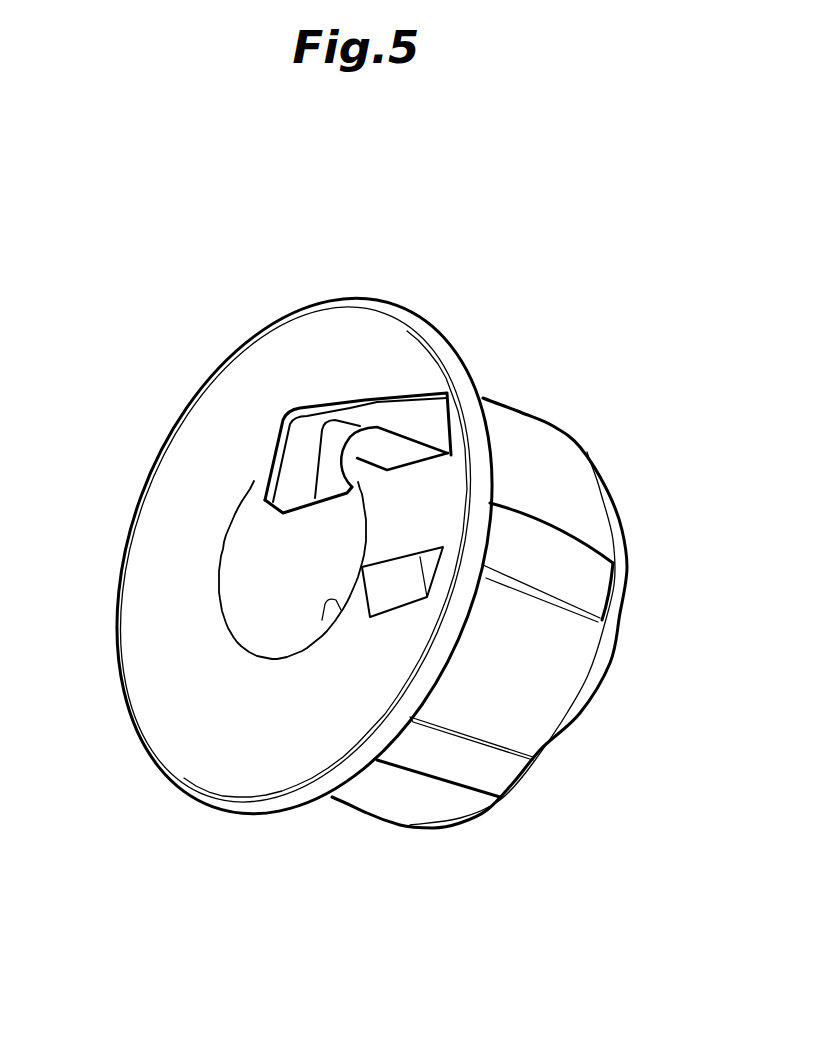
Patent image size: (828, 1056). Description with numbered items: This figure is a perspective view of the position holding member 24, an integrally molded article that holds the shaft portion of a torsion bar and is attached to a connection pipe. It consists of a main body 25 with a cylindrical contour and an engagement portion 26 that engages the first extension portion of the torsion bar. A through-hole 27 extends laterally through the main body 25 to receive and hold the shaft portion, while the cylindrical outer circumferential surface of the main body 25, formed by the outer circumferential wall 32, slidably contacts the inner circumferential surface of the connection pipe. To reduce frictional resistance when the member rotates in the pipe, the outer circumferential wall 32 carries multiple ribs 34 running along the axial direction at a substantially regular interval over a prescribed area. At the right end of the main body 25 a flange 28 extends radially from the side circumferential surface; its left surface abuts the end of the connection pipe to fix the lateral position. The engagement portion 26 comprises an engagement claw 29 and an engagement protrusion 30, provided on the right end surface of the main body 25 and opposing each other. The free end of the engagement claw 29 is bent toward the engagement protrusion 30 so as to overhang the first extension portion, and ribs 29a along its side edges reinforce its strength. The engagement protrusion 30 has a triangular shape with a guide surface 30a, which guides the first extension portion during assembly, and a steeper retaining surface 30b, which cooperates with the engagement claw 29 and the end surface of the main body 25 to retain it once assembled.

The position holding member 24 is at (210, 309).
The main body 25 is at (513, 408).
The engagement portion 26 is at (107, 432).
The through-hole 27 is at (250, 651).
The flange 28 is at (437, 338).
The engagement claw 29 is at (270, 450).
The ribs 29a is at (306, 429).
The engagement protrusion 30 is at (363, 588).
The guide surface 30a is at (402, 582).
The retaining surface 30b is at (420, 547).
The outer circumferential wall 32 is at (547, 727).
The ribs 34 is at (459, 777).